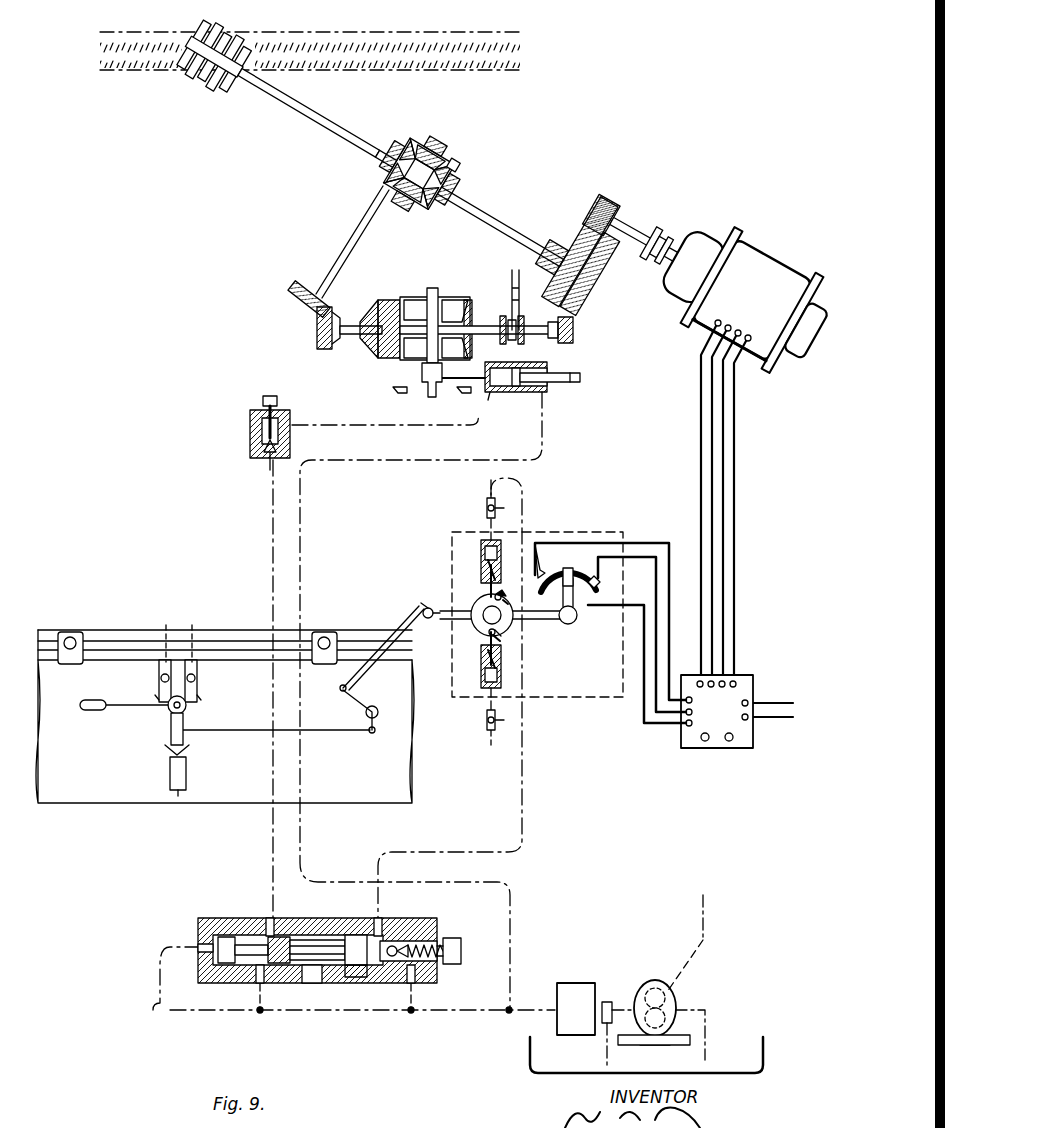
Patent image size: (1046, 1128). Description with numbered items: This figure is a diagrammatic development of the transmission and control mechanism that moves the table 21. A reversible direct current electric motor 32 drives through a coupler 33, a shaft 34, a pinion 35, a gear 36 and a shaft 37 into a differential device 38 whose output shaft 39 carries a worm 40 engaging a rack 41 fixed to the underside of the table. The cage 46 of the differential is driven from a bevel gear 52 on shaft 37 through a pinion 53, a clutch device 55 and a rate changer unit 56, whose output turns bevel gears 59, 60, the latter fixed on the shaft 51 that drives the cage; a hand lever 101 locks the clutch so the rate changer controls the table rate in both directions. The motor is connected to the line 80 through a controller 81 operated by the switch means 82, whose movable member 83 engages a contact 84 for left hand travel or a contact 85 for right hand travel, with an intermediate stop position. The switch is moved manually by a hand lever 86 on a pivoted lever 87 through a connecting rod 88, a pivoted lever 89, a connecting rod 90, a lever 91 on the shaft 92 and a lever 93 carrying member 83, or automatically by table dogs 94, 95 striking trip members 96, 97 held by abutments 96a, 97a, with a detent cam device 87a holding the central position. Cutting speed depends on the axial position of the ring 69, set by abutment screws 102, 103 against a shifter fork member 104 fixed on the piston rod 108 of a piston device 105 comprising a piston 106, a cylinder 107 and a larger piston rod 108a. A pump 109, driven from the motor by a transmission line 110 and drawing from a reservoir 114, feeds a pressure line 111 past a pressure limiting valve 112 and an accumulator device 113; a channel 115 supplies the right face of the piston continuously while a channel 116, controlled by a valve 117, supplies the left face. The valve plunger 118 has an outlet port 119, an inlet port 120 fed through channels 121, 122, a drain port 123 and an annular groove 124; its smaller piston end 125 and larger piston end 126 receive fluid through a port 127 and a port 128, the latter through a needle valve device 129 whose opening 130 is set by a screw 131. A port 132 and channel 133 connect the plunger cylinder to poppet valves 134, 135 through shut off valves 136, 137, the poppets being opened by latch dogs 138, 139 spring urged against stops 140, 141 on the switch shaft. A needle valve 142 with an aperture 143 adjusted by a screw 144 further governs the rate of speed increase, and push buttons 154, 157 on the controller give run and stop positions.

The table 21 is at (140, 632).
The electric motor 32 is at (745, 296).
The coupler 33 is at (662, 250).
The shaft 34 is at (631, 231).
The pinion 35 is at (601, 214).
The gear 36 is at (580, 252).
The shaft 37 is at (470, 208).
The differential device 38 is at (419, 174).
The shaft 39 is at (309, 113).
The worm 40 is at (214, 57).
The rack 41 is at (136, 72).
The cage 46 is at (454, 165).
The shaft 51 is at (347, 224).
The bevel gear 52 is at (589, 273).
The pinion 53 is at (575, 328).
The clutch device 55 is at (503, 316).
The rate changer unit 56 is at (452, 322).
The bevel gear 59 is at (316, 332).
The bevel gear 60 is at (292, 297).
The non-rotatable ring 69 is at (432, 292).
The line 80 is at (800, 718).
The controller 81 is at (700, 728).
The switch means 82 is at (580, 532).
The movable switch member 83 is at (583, 567).
The switch contact 84 is at (598, 584).
The switch contact 85 is at (548, 545).
The hand lever 86 is at (116, 712).
The pivoted lever 87 is at (168, 716).
The detent cam device 87a is at (192, 760).
The connecting rod 88 is at (232, 730).
The pivoted lever 89 is at (352, 700).
The connecting rod 90 is at (398, 614).
The lever 91 is at (433, 600).
The shaft 92 is at (465, 622).
The lever 93 is at (578, 617).
The table dog 94 is at (72, 632).
The table dog 95 is at (328, 632).
The trip member 96 is at (200, 670).
The abutment 96a is at (208, 631).
The trip member 97 is at (153, 666).
The abutment 97a is at (164, 631).
The hand lever 101 is at (522, 268).
The abutment screw 102 is at (400, 393).
The abutment screw 103 is at (463, 393).
The shifter fork member 104 is at (428, 399).
The piston device 105 is at (558, 375).
The piston 106 is at (518, 392).
The cylinder 107 is at (506, 404).
The piston rod 108 is at (470, 372).
The piston rod 108a is at (574, 377).
The pump 109 is at (668, 997).
The transmission line 110 is at (703, 940).
The pressure line 111 is at (515, 1012).
The pressure limiting valve 112 is at (610, 1000).
The accumulator device 113 is at (572, 984).
The reservoir 114 is at (530, 1060).
The channel 115 is at (543, 413).
The channel 116 is at (478, 424).
The valve 117 is at (318, 945).
The plunger 118 is at (306, 938).
The outlet port 119 is at (270, 918).
The inlet port 120 is at (255, 978).
The channel 121 is at (278, 984).
The channel 122 is at (320, 1015).
The drain port 123 is at (312, 982).
The annular groove 124 is at (296, 935).
The smaller piston end 125 is at (228, 962).
The larger piston end 126 is at (356, 978).
The port 127 is at (200, 947).
The port 128 is at (432, 982).
The needle valve device 129 is at (442, 938).
The opening 130 is at (393, 945).
The screw 131 is at (455, 962).
The port 132 is at (377, 918).
The channel 133 is at (500, 852).
The poppet valve 134 is at (480, 672).
The poppet valve 135 is at (480, 558).
The shut off valve 136 is at (485, 723).
The shut off valve 137 is at (487, 510).
The latch dog 138 is at (501, 640).
The latch dog 139 is at (502, 596).
The stop 140 is at (498, 634).
The stop 141 is at (513, 607).
The needle valve 142 is at (240, 435).
The aperture 143 is at (258, 455).
The screw 144 is at (262, 410).
The push button 154 is at (703, 741).
The push button 157 is at (732, 741).